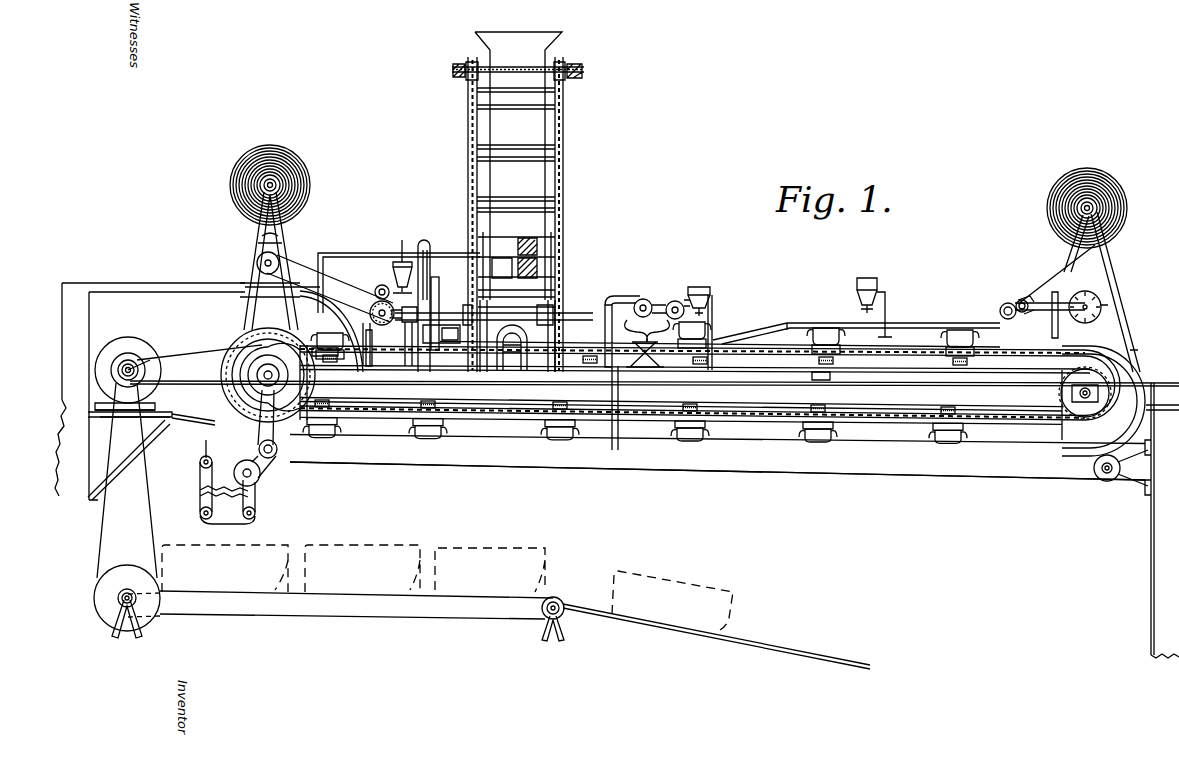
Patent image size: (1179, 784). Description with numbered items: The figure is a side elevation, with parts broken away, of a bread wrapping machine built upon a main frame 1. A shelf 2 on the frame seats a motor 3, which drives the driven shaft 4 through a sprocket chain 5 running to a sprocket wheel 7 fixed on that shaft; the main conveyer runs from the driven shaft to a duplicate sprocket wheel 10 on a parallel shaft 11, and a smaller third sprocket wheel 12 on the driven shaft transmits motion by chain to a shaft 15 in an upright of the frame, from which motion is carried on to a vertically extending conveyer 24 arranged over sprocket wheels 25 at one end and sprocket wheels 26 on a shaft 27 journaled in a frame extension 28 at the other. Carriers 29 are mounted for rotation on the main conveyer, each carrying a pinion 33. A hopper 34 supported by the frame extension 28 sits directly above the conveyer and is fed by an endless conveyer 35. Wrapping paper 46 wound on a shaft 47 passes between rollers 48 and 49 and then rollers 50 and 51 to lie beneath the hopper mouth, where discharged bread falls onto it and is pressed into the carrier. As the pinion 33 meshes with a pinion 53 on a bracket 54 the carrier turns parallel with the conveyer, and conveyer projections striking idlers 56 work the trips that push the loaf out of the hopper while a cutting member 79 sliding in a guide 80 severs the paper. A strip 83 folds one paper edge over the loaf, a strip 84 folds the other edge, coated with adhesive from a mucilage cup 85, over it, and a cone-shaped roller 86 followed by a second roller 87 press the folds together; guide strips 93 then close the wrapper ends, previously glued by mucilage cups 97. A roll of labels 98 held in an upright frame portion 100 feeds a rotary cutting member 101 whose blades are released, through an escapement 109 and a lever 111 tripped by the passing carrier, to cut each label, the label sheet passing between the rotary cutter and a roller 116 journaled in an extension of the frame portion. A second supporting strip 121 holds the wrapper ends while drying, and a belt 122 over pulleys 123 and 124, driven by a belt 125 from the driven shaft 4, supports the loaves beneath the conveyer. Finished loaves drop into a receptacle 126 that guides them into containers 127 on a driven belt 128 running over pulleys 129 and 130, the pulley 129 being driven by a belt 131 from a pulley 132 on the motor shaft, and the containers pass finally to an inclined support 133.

The main frame 1 is at (74, 290).
The shelf 2 is at (128, 462).
The motor 3 is at (128, 337).
The driven shaft 4 is at (607, 300).
The sprocket chain 5 is at (654, 365).
The sprocket wheel 7 is at (1150, 536).
The sprocket wheel 10 is at (1052, 402).
The shaft 11 is at (1085, 393).
The third sprocket wheel 12 is at (1152, 412).
The shaft 15 is at (264, 266).
The vertically extending conveyer 24 is at (565, 162).
The sprocket wheels 25 is at (552, 312).
The sprocket wheels 26 is at (570, 62).
The shaft 27 is at (518, 68).
The frame extension 28 is at (584, 76).
The carriers 29 is at (434, 360).
The pinion 33 is at (455, 374).
The hopper 34 is at (497, 30).
The endless conveyer 35 is at (826, 376).
The wrapping paper 46 is at (300, 172).
The shaft 47 is at (277, 186).
The roller 48 is at (284, 233).
The roller 49 is at (257, 260).
The roller 50 is at (380, 286).
The roller 51 is at (370, 312).
The pinion 53 is at (324, 370).
The bracket 54 is at (362, 368).
The idlers 56 is at (506, 372).
The cutting member 79 is at (445, 307).
The guide 80 is at (430, 250).
The strip 83 is at (677, 300).
The strip 84 is at (716, 278).
The mucilage cup 85 is at (403, 259).
The cone-shaped roller 86 is at (644, 298).
The second roller 87 is at (688, 300).
The guide strips 93 is at (792, 324).
The mucilage cups 97 is at (876, 280).
The roll of labels 98 is at (1118, 208).
The upright frame portion 100 is at (1068, 262).
The rotary cutting member 101 is at (1020, 298).
The escapement 109 is at (1096, 296).
The lever 111 is at (1050, 322).
The roller 116 is at (1002, 308).
The second supporting strip 121 is at (1045, 444).
The belt 122 is at (960, 476).
The pulley 123 is at (1107, 482).
The pulley 124 is at (275, 462).
The belt 125 is at (235, 398).
The receptacle 126 is at (210, 450).
The containers 127 is at (330, 540).
The driven belt 128 is at (256, 616).
The pulley 129 is at (104, 600).
The pulley 130 is at (561, 593).
The belt 131 is at (98, 548).
The pulley 132 is at (150, 360).
The inclined support 133 is at (766, 628).